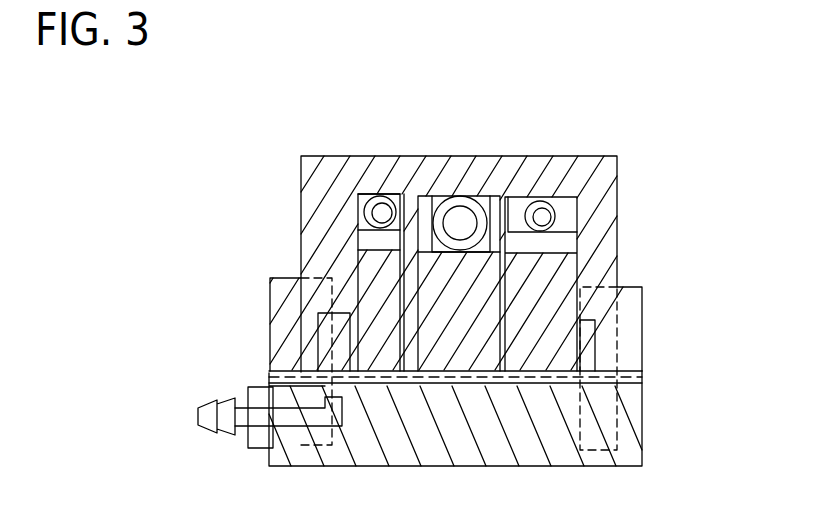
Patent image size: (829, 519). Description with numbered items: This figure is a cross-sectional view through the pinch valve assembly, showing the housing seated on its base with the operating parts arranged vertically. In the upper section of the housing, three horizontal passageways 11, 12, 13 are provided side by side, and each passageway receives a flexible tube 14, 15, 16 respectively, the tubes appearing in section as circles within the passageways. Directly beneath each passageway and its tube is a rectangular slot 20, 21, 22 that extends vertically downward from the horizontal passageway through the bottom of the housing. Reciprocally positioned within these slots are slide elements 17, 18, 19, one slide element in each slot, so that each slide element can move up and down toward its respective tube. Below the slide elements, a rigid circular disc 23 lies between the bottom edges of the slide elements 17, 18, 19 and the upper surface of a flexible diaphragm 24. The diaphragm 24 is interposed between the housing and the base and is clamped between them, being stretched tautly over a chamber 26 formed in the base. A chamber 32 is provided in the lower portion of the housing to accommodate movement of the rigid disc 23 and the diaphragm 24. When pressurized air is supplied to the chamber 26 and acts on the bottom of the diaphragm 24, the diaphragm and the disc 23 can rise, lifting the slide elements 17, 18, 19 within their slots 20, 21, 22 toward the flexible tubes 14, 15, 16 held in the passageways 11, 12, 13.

The horizontal passageway 11 is at (542, 215).
The horizontal passageway 12 is at (460, 218).
The horizontal passageway 13 is at (380, 211).
The flexible tube 14 is at (617, 172).
The flexible tube 15 is at (462, 220).
The flexible tube 16 is at (366, 194).
The slide element 17 is at (553, 273).
The slide element 18 is at (445, 265).
The slide element 19 is at (368, 268).
The rectangular slot 20 is at (556, 220).
The rectangular slot 21 is at (503, 205).
The rectangular slot 22 is at (360, 212).
The rigid circular disc 23 is at (642, 378).
The flexible diaphragm 24 is at (269, 376).
The chamber 26 is at (558, 392).
The chamber 32 is at (585, 350).